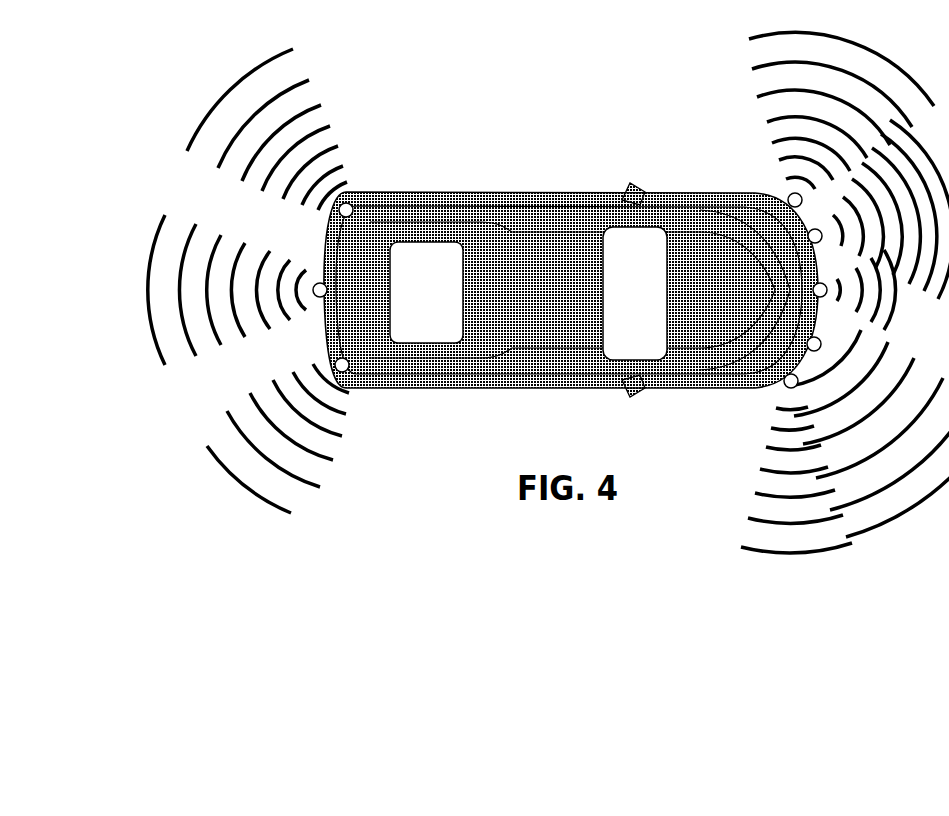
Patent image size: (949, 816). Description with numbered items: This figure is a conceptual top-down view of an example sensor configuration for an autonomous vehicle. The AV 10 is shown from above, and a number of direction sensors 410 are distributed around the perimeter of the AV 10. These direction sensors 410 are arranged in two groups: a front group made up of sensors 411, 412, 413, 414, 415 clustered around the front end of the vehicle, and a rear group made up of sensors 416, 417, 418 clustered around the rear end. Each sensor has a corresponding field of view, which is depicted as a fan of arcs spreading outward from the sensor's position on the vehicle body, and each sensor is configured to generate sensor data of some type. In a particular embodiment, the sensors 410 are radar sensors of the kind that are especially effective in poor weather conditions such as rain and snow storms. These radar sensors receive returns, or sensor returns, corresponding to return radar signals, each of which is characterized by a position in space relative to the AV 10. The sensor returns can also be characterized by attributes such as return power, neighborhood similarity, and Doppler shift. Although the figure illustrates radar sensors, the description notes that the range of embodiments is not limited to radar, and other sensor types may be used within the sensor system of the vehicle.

The AV 10 is at (647, 303).
The direction sensors 410 is at (745, 156).
The front group sensor 411 is at (802, 195).
The front group sensor 412 is at (823, 238).
The front group sensor 413 is at (826, 297).
The front group sensor 414 is at (816, 352).
The front group sensor 415 is at (788, 388).
The rear group sensor 416 is at (340, 216).
The rear group sensor 417 is at (318, 300).
The rear group sensor 418 is at (348, 373).